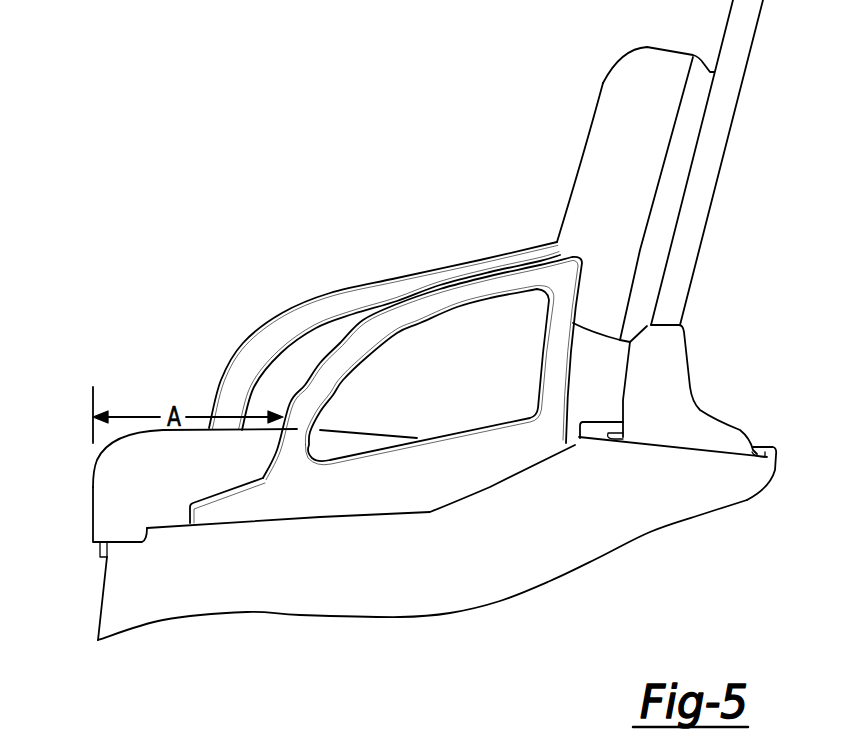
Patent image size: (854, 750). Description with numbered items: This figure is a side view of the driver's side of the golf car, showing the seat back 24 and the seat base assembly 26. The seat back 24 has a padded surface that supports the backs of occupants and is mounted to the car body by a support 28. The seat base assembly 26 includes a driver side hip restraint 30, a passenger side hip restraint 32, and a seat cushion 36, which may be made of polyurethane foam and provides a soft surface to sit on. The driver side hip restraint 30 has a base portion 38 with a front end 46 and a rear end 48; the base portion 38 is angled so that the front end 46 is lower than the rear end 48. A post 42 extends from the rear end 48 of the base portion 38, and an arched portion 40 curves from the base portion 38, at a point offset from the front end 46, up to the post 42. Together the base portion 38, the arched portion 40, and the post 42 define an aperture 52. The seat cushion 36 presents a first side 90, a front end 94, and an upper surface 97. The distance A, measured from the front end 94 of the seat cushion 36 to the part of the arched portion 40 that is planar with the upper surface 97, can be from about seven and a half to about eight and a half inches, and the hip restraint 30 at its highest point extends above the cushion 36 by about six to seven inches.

The seat back 24 is at (603, 85).
The seat base assembly 26 is at (92, 500).
The support 28 is at (680, 398).
The driver side hip restraint 30 is at (299, 394).
The passenger side hip restraint 32 is at (281, 314).
The seat cushion 36 is at (92, 478).
The base portion 38 is at (477, 483).
The arched portion 40 is at (309, 380).
The post 42 is at (543, 380).
The front end 46 is at (210, 503).
The rear end 48 is at (530, 428).
The aperture 52 is at (401, 337).
The first side 90 is at (127, 505).
The front end 94 is at (92, 528).
The upper surface 97 is at (345, 429).